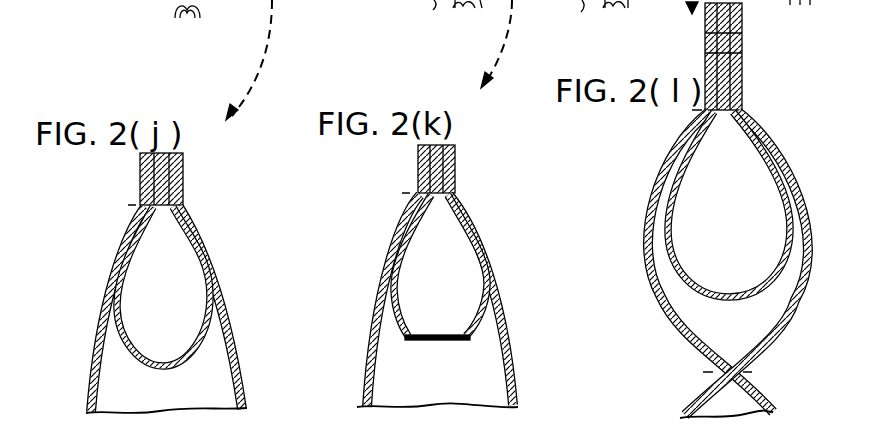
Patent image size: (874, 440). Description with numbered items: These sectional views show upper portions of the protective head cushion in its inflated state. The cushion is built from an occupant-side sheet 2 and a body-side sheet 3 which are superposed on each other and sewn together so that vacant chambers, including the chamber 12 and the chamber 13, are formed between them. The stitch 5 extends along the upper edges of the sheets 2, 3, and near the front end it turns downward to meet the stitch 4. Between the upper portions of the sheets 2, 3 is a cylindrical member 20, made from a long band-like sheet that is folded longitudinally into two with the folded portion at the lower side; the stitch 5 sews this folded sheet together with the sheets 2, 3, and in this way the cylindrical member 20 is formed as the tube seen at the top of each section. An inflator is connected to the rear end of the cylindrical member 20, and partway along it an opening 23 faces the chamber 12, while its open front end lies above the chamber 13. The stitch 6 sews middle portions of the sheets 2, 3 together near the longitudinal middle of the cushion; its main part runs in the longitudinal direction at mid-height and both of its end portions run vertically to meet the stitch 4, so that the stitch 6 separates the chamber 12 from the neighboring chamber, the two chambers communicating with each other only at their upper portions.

In FIG. 2J, the occupant-side sheet 2 is at (235, 313).
In FIG. 2K, the occupant-side sheet 2 is at (508, 332).
In FIG. 2L, the occupant-side sheet 2 is at (810, 247).
In FIG. 2J, the body-side sheet 3 is at (88, 375).
In FIG. 2K, the body-side sheet 3 is at (365, 357).
In FIG. 2L, the body-side sheet 3 is at (647, 260).
In FIG. 2J, the stitch 4 is at (172, 5).
In FIG. 2K, the stitch 4 is at (447, 18).
In FIG. 2L, the stitch 4 is at (683, 20).
In FIG. 2J, the stitch 5 is at (187, 202).
In FIG. 2K, the stitch 5 is at (462, 192).
In FIG. 2L, the stitch 5 is at (748, 110).
In FIG. 2L, the stitch 6 is at (753, 368).
In FIG. 2K, the chamber 12 is at (487, 394).
In FIG. 2J, the chamber 13 is at (208, 388).
In FIG. 2J, the cylindrical member 20 is at (128, 357).
In FIG. 2K, the cylindrical member 20 is at (392, 330).
In FIG. 2L, the cylindrical member 20 is at (705, 287).
In FIG. 2K, the opening 23 is at (442, 327).